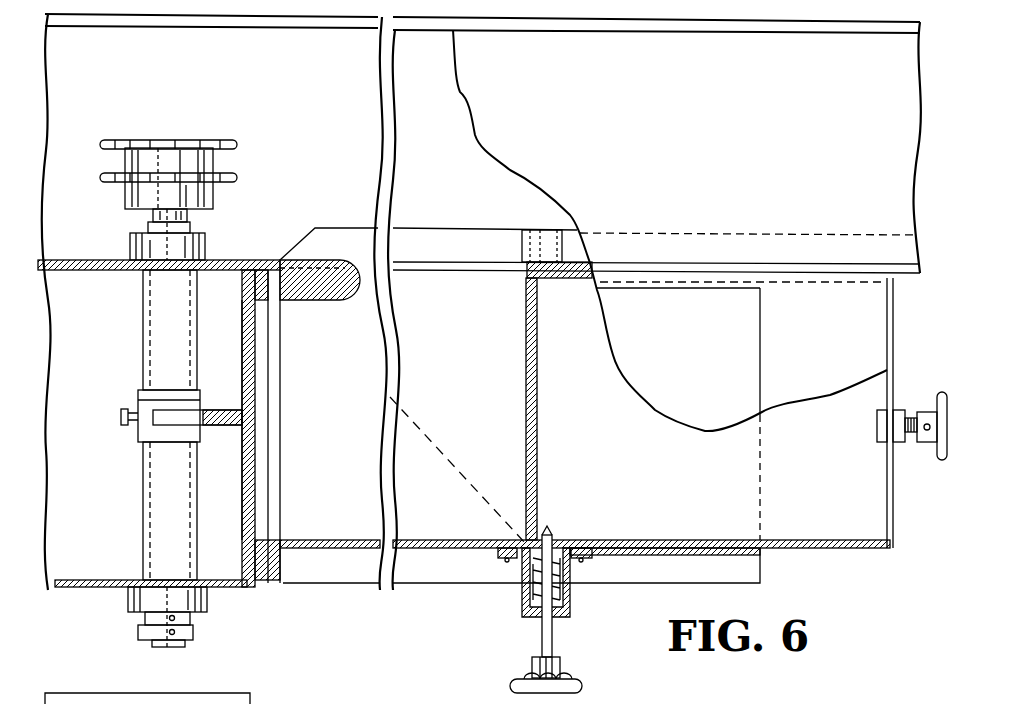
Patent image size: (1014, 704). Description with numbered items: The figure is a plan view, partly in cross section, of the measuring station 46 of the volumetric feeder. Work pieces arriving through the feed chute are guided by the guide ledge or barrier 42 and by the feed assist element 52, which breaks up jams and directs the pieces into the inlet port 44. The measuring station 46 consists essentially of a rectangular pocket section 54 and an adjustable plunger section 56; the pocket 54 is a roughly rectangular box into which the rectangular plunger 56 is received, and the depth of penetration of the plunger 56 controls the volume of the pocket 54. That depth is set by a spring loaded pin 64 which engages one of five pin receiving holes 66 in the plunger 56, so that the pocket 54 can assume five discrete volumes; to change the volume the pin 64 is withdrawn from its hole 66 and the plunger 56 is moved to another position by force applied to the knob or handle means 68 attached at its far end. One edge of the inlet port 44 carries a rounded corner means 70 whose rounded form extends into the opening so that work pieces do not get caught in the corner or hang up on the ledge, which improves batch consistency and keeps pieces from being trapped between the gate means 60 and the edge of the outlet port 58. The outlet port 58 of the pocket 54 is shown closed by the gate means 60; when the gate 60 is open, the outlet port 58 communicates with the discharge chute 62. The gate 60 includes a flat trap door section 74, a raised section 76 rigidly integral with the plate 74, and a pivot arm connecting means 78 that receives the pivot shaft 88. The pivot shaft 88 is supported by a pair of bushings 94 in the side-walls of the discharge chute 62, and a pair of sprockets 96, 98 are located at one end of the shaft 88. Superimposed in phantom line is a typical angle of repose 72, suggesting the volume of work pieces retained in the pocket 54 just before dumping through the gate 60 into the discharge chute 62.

The guide ledge or barrier 42 is at (481, 359).
The inlet port 44 is at (497, 272).
The measuring station 46 is at (475, 585).
The feed assist element 52 is at (533, 233).
The rectangular pocket section 54 is at (470, 394).
The adjustable plunger section 56 is at (690, 469).
The outlet port 58 is at (262, 416).
The gate means 60 is at (238, 376).
The discharge chute 62 is at (104, 394).
The spring loaded pin 64 is at (560, 638).
The pin receiving holes 66 is at (555, 538).
The knob or handle means 68 is at (945, 392).
The rounded corner means 70 is at (330, 301).
The angle of repose 72 is at (462, 438).
The flat trap door section 74 is at (250, 483).
The raised section 76 is at (218, 427).
The pivot arm connecting means 78 is at (138, 430).
The pivot shaft 88 is at (199, 487).
The bushings 94 is at (207, 237).
The sprocket 96 is at (237, 178).
The sprocket 98 is at (237, 145).